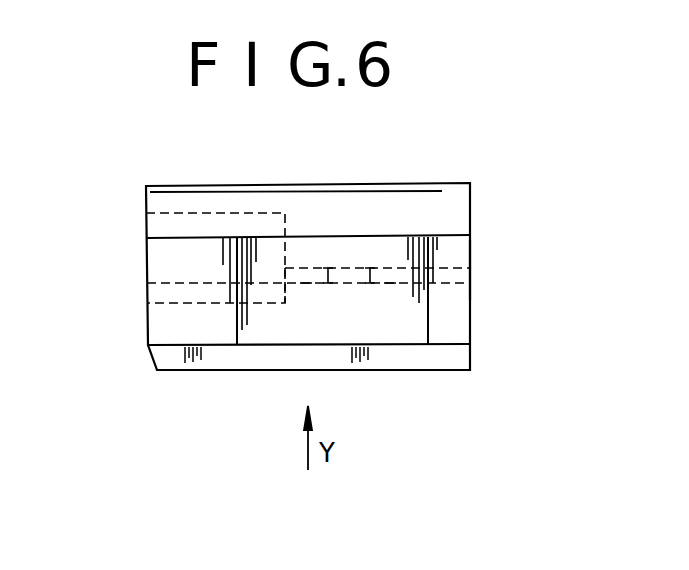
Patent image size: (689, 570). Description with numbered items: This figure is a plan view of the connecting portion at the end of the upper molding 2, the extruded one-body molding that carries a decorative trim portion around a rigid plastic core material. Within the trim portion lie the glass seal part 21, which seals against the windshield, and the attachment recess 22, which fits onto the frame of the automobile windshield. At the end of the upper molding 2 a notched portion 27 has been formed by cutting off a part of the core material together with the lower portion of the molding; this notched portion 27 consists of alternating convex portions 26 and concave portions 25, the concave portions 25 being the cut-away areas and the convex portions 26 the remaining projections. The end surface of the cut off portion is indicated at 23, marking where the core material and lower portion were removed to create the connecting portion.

The upper molding 2 is at (144, 337).
The glass seal part 21 is at (168, 293).
The attachment recess 22 is at (222, 213).
The end surface of the cut off portion 23 is at (285, 266).
The concave portions 25 is at (308, 275).
The convex portions 26 is at (356, 272).
The notched portion 27 is at (474, 262).